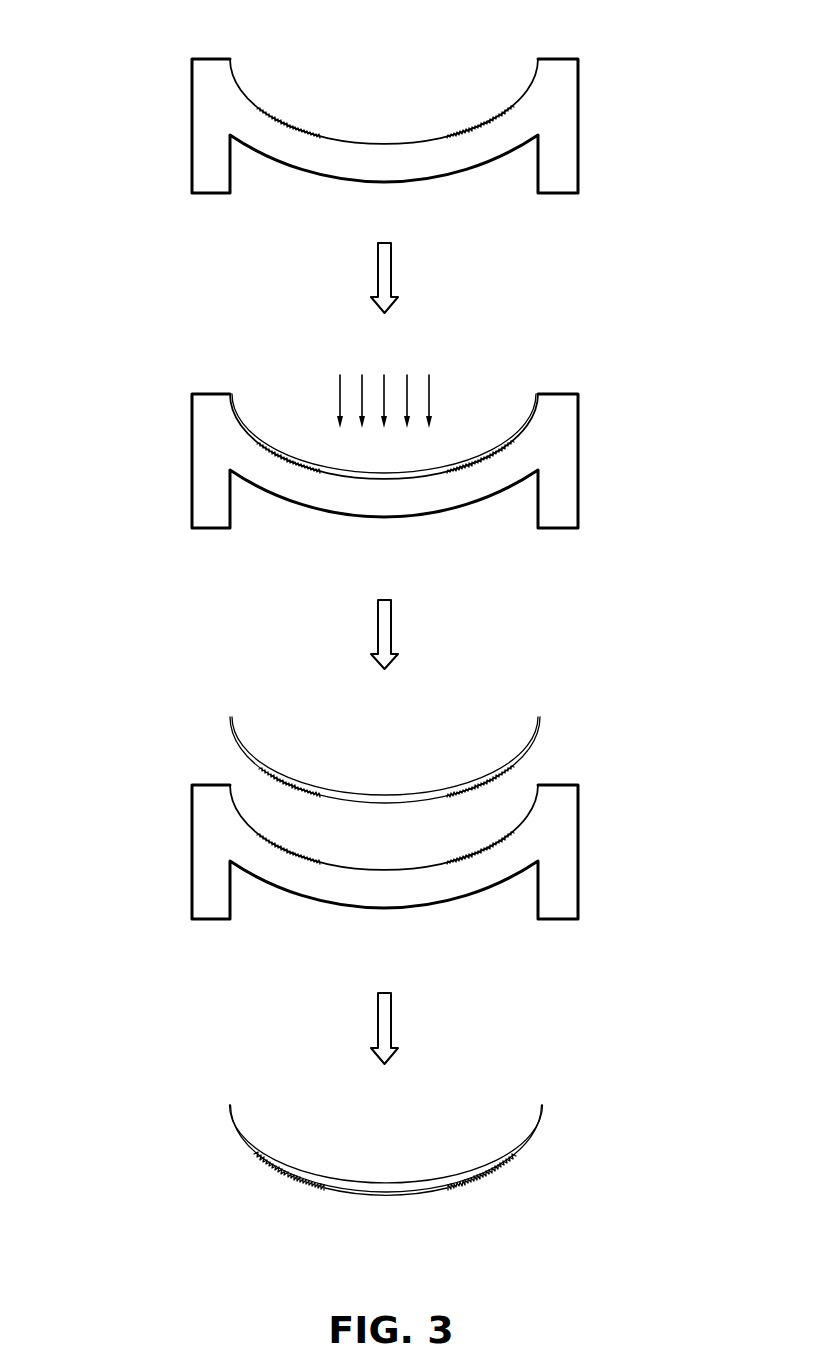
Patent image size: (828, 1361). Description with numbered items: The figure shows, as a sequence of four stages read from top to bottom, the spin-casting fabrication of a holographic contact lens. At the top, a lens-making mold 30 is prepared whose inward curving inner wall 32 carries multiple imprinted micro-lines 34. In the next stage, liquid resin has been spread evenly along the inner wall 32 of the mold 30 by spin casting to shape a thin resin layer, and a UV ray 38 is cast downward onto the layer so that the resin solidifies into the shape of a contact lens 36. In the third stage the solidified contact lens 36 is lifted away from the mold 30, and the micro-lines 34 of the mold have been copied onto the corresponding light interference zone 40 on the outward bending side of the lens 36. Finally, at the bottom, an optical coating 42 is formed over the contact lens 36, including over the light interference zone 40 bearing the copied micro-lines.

The lens-making mold 30 is at (200, 132).
The inner wall 32 is at (528, 89).
The micro-lines 34 is at (291, 126).
The contact lens 36 is at (492, 449).
The UV ray 38 is at (430, 383).
The light interference zone 40 is at (497, 778).
The optical coating 42 is at (480, 1177).